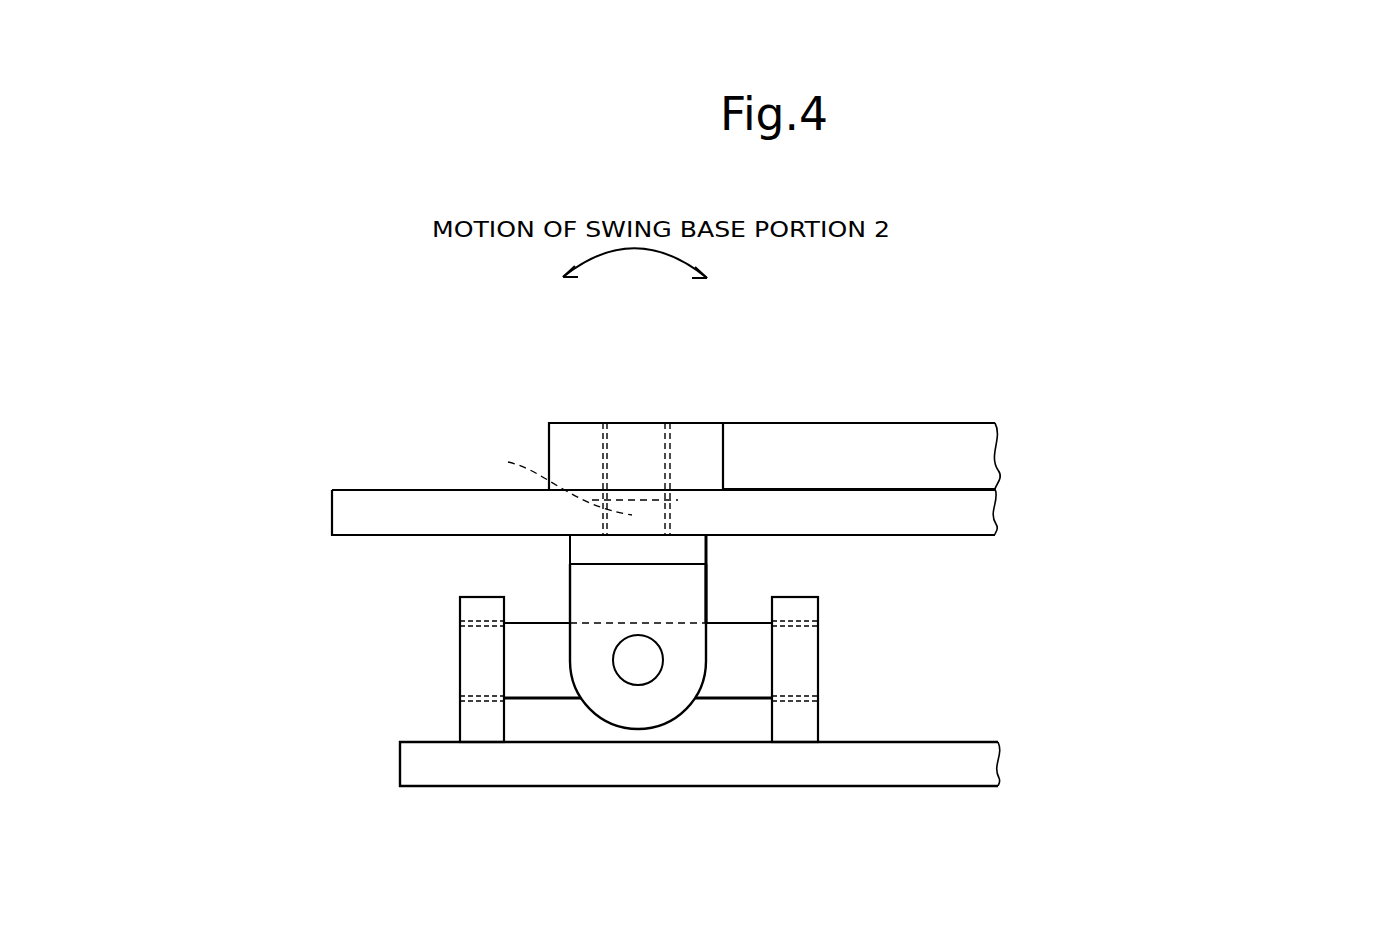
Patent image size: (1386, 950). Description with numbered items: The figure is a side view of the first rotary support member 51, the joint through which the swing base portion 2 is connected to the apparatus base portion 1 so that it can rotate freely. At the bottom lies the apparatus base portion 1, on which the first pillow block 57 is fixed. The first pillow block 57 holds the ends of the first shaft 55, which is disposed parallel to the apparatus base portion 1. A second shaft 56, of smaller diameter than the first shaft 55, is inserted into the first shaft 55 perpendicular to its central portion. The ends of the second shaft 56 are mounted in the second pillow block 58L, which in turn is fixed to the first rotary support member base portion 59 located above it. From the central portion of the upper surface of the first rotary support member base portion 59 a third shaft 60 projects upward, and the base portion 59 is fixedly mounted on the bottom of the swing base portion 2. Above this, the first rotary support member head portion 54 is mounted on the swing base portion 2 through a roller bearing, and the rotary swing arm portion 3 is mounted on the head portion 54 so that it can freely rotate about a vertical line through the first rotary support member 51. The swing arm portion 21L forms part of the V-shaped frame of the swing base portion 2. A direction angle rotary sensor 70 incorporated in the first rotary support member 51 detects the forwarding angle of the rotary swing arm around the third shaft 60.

The apparatus base portion 1 is at (965, 767).
The swing base portion 2 is at (965, 457).
The rotary swing arm portion 3 is at (872, 432).
The swing arm portion 21L is at (967, 520).
The first rotary support member 51 is at (592, 400).
The first rotary support member head portion 54 is at (689, 443).
The first shaft 55 is at (747, 670).
The second shaft 56 is at (638, 660).
The first pillow block 57 is at (860, 702).
The second pillow block 58L is at (675, 582).
The first rotary support member base portion 59 is at (590, 545).
The third shaft 60 is at (461, 483).
The direction angle rotary sensor 70 is at (678, 500).